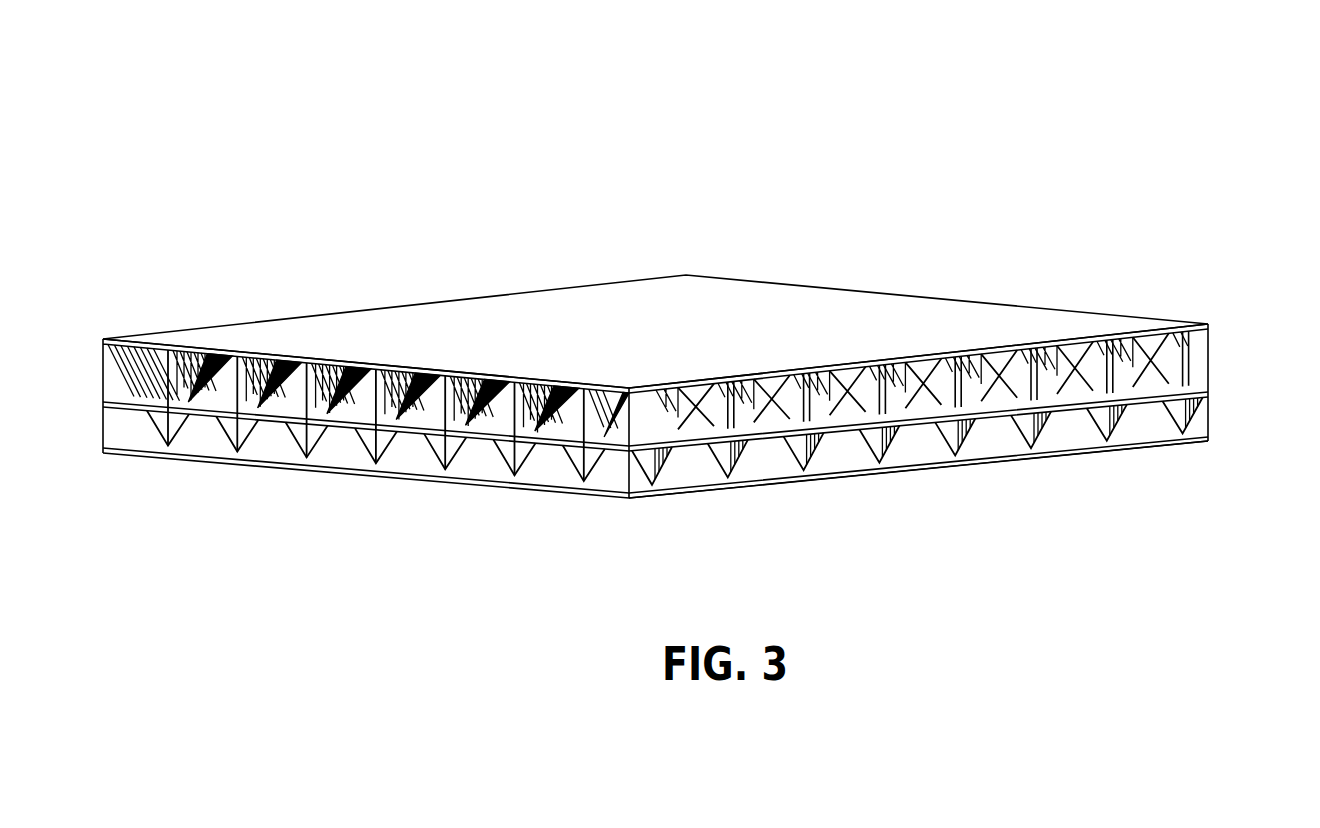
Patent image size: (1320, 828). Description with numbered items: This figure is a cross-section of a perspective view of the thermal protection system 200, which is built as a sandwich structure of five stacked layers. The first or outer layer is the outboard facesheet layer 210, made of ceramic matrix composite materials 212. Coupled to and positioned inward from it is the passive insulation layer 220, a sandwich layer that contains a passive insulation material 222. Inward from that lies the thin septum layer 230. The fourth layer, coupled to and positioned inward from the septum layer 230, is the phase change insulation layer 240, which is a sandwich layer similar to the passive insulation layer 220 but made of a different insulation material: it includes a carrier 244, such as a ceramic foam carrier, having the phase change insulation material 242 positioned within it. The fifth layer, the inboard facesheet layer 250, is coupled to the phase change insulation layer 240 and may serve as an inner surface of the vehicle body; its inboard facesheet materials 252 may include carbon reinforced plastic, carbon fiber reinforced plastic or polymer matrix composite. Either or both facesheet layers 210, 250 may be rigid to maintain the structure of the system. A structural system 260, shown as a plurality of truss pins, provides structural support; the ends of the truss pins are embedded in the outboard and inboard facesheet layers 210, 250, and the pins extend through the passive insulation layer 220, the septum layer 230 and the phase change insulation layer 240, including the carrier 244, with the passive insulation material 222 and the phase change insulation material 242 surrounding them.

The thermal protection system 200 is at (419, 168).
The outboard facesheet layer 210 is at (1216, 315).
The ceramic matrix composite materials 212 is at (825, 313).
The passive insulation layer 220 is at (1222, 348).
The passive insulation material 222 is at (1190, 327).
The septum layer 230 is at (1222, 390).
The phase change insulation layer 240 is at (1222, 422).
The phase change insulation material 242 is at (1142, 417).
The carrier 244 is at (1142, 417).
The inboard facesheet layer 250 is at (1217, 450).
The inboard facesheet materials 252 is at (850, 480).
The structural system 260 is at (1141, 347).